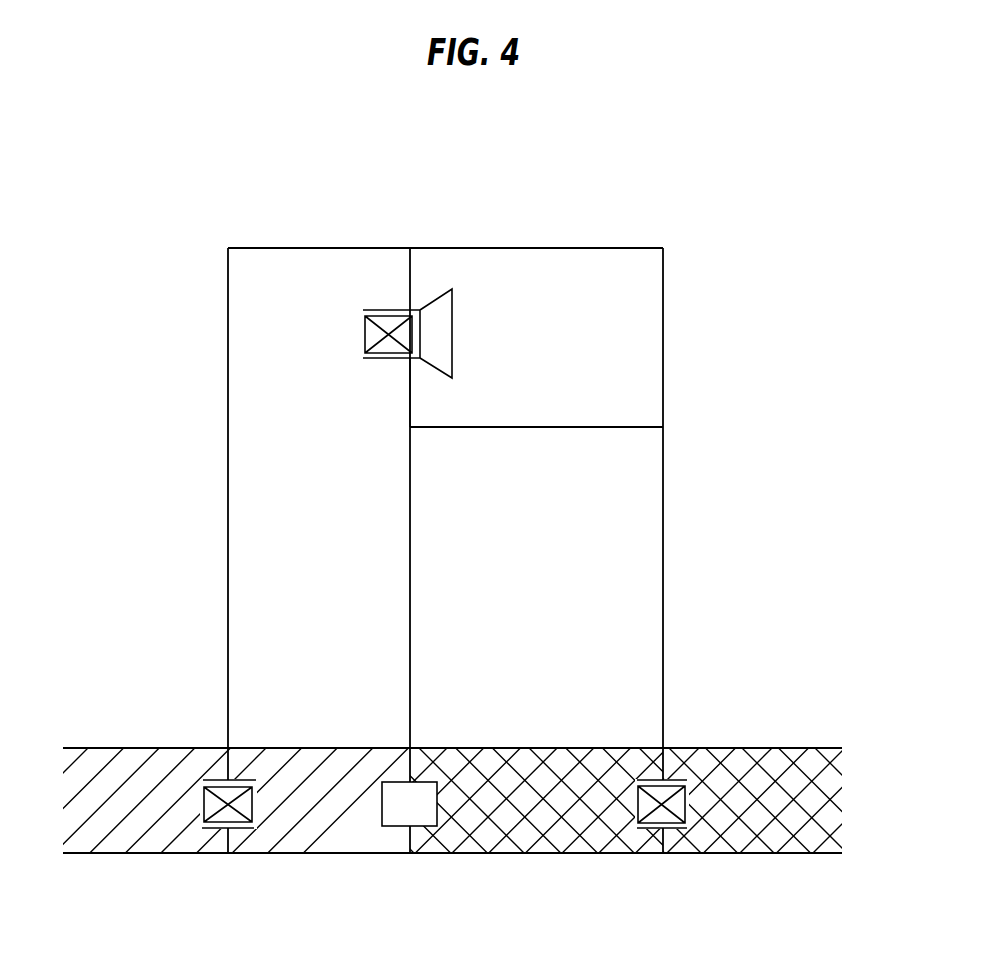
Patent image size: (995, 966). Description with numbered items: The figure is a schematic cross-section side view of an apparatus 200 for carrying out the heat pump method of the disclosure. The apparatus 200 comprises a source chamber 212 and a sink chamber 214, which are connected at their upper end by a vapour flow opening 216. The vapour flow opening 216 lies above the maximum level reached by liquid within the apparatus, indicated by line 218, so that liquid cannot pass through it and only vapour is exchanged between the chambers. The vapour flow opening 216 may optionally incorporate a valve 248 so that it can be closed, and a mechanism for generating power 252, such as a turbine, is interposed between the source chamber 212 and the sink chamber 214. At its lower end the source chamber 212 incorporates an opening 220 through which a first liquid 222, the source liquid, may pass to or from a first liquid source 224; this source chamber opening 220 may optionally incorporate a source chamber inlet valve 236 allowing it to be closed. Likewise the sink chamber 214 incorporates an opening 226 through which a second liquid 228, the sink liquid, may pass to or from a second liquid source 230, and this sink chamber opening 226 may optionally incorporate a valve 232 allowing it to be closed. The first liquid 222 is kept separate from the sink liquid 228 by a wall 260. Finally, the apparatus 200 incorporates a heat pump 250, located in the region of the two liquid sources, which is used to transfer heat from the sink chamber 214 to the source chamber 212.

The apparatus 200 is at (628, 229).
The source chamber 212 is at (253, 465).
The sink chamber 214 is at (652, 360).
The vapour flow opening 216 is at (400, 360).
The line indicating maximum liquid level 218 is at (578, 428).
The source chamber opening 220 is at (258, 814).
The first liquid 222 is at (333, 850).
The first liquid source 224 is at (85, 850).
The sink chamber opening 226 is at (631, 814).
The second liquid 228 is at (475, 850).
The second liquid source 230 is at (788, 850).
The sink chamber opening valve 232 is at (688, 798).
The source chamber inlet valve 236 is at (203, 803).
The valve 248 is at (365, 333).
The heat pump 250 is at (393, 826).
The mechanism for generating power 252 is at (440, 335).
The wall 260 is at (410, 670).